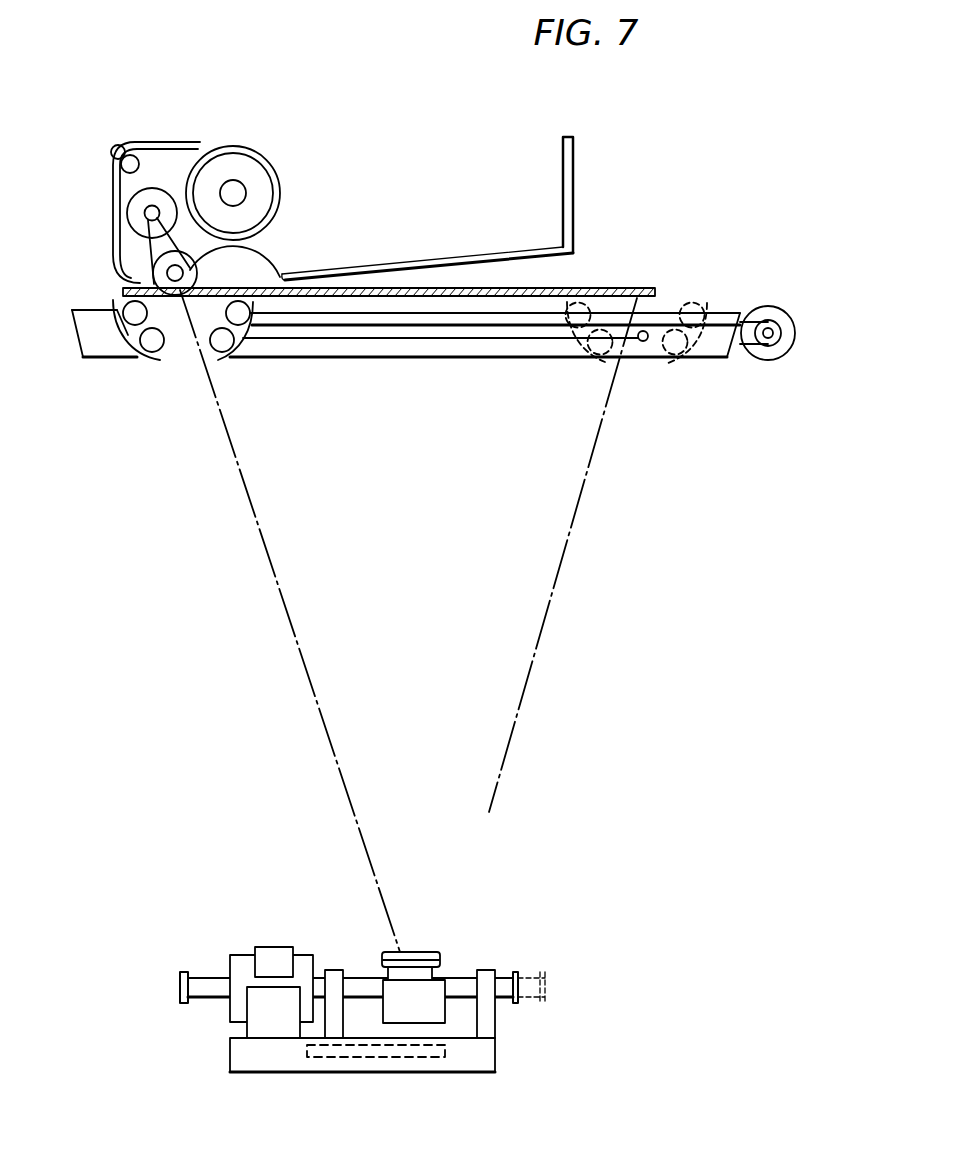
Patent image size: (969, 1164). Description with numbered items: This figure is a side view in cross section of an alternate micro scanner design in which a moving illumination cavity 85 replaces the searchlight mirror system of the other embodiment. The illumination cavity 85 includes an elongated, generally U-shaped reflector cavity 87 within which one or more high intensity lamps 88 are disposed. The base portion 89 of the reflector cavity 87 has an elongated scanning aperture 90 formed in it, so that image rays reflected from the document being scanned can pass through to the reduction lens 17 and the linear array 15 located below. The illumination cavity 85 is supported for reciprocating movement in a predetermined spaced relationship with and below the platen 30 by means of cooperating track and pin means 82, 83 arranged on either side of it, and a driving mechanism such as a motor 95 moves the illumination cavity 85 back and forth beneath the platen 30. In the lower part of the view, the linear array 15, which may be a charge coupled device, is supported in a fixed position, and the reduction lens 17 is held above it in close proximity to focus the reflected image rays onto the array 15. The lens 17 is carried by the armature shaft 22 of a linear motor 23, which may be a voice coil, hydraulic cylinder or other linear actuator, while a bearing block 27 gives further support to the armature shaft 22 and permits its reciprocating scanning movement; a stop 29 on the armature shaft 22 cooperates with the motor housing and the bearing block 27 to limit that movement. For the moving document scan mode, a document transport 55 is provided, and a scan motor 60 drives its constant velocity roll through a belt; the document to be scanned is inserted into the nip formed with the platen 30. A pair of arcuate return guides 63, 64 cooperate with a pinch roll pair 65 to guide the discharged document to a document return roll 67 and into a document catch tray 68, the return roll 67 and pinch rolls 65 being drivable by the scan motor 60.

The linear array 15 is at (422, 1040).
The reduction lens 17 is at (392, 953).
The armature shaft 22 is at (210, 998).
The linear motor 23 is at (232, 957).
The bearing block 27 is at (490, 1012).
The stop 29 is at (183, 1003).
The platen 30 is at (569, 290).
The document transport 55 is at (348, 198).
The scan motor 60 is at (143, 213).
The arcuate return guide 63 is at (112, 193).
The arcuate return guide 64 is at (121, 196).
The pinch roll pair 65 is at (113, 146).
The document return roll 67 is at (275, 170).
The document catch tray 68 is at (575, 180).
The track 82 is at (526, 332).
The pin 83 is at (644, 341).
The moving illumination cavity 85 is at (264, 335).
The U-shaped reflector cavity 87 is at (284, 283).
The high intensity lamp 88 is at (146, 340).
The base portion 89 is at (226, 360).
The scanning aperture 90 is at (158, 376).
The motor 95 is at (769, 312).